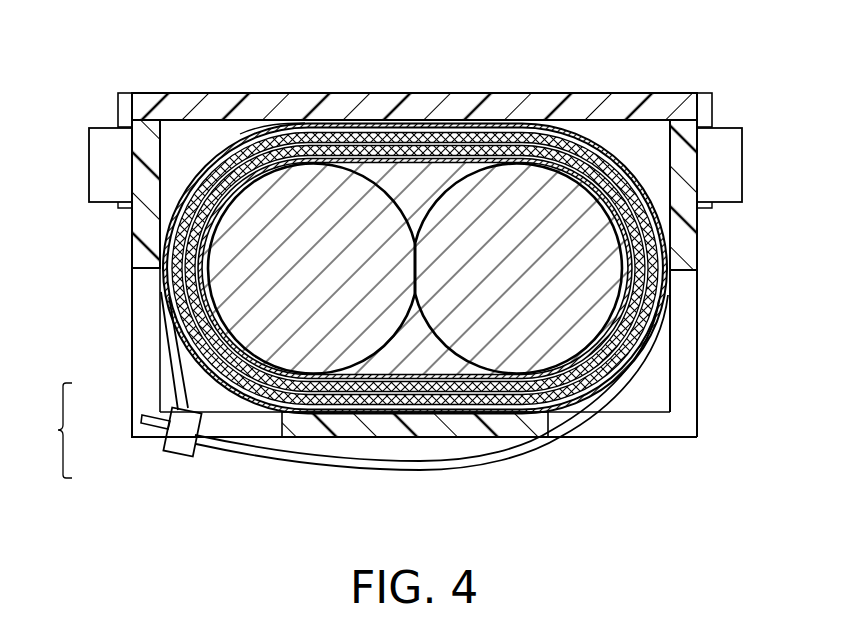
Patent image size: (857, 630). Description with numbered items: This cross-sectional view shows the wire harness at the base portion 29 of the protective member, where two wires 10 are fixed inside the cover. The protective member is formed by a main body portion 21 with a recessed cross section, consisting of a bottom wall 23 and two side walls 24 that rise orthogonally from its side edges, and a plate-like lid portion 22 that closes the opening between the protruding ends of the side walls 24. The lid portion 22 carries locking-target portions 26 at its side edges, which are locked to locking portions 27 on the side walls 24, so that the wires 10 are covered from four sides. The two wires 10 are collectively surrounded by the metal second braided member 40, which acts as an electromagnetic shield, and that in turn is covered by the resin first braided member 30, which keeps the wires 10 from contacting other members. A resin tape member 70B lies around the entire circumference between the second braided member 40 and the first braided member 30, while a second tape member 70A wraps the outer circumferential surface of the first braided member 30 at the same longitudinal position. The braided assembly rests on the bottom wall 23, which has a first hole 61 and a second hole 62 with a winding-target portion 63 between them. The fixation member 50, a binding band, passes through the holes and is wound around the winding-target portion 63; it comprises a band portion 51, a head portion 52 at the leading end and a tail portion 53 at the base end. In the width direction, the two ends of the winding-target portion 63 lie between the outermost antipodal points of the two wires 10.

The wires 10 is at (401, 208).
The main body portion 21 is at (633, 440).
The lid portion 22 is at (623, 92).
The bottom wall 23 is at (648, 393).
The side walls 24 is at (697, 229).
The locking-target portions 26 is at (118, 97).
The locking portions 27 is at (89, 163).
The base portion 29 is at (207, 92).
The first braided member 30 is at (458, 125).
The second braided member 40 is at (455, 166).
The fixation member 50 is at (48, 430).
The band portion 51 is at (170, 384).
The head portion 52 is at (170, 453).
The tail portion 53 is at (143, 421).
The first hole 61 is at (142, 269).
The second hole 62 is at (686, 269).
The winding-target portion 63 is at (405, 438).
The tape member 70A is at (578, 432).
The tape member 70B is at (304, 160).